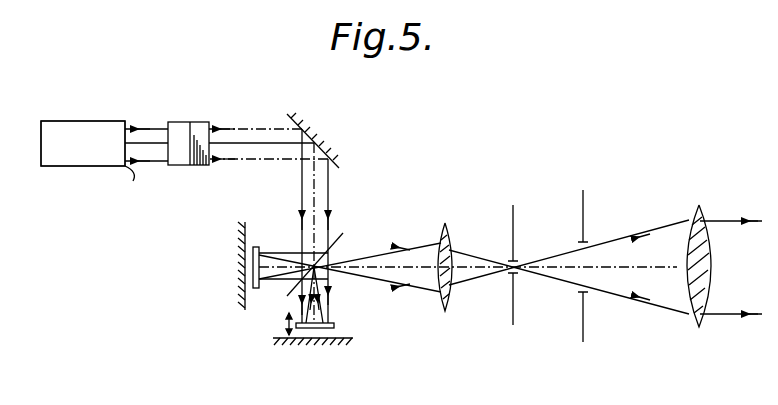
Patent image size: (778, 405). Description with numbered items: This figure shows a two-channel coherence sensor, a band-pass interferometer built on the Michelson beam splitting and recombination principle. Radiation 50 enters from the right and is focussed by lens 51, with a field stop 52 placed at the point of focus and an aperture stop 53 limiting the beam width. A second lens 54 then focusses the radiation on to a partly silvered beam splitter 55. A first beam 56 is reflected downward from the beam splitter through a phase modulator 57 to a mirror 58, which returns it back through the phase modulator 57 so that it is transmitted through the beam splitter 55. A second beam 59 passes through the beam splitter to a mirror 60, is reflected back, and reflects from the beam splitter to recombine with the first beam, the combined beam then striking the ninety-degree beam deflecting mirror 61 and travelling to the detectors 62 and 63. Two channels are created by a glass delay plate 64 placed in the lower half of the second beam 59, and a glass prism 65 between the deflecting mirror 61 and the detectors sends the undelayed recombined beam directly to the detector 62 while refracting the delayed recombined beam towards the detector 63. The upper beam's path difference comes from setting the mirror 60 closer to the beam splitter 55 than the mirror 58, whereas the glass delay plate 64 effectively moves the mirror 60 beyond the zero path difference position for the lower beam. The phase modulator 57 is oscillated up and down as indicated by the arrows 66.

The radiation 50 is at (735, 223).
The lens 51 is at (697, 216).
The field stop 52 is at (516, 214).
The aperture stop 53 is at (585, 205).
The second lens 54 is at (448, 233).
The beam splitter 55 is at (338, 238).
The first beam 56 is at (330, 306).
The phase modulator 57 is at (335, 326).
The mirror 58 is at (345, 339).
The second beam 59 is at (279, 252).
The mirror 60 is at (244, 301).
The beam deflecting mirror 61 is at (311, 131).
The detector 62 is at (75, 127).
The detector 63 is at (83, 143).
The glass delay plate 64 is at (255, 246).
The glass prism 65 is at (193, 121).
The arrows 66 is at (287, 325).